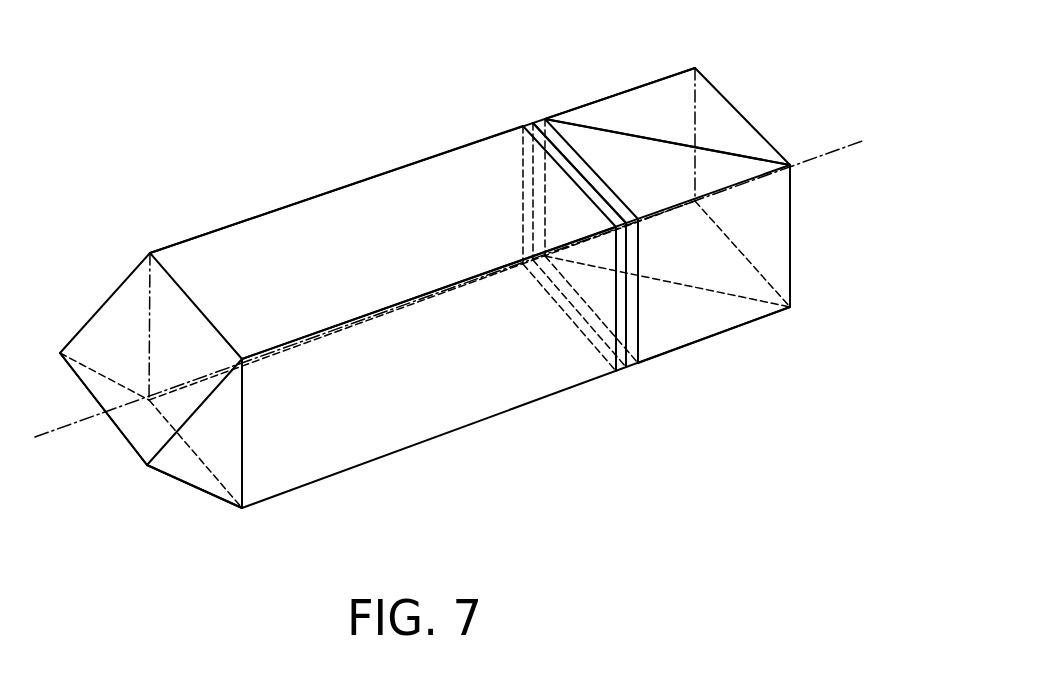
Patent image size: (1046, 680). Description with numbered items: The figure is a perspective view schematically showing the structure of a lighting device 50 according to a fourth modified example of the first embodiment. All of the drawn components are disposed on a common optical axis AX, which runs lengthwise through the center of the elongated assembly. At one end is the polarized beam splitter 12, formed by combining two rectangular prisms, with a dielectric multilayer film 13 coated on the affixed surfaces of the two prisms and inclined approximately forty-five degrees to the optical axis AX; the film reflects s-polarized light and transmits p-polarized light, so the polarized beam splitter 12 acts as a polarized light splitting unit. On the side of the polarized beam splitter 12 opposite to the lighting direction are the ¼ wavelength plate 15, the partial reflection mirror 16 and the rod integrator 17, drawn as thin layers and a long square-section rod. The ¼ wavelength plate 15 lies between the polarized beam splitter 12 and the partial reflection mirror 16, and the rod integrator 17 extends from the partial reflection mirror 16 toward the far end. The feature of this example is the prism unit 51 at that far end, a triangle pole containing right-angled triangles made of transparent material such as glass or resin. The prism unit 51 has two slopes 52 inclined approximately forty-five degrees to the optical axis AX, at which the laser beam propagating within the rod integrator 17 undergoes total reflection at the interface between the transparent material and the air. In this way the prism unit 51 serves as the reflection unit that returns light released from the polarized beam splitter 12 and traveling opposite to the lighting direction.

The lighting device 50 is at (277, 155).
The prism unit 51 is at (83, 298).
The slopes 52 is at (137, 430).
The rod integrator 17 is at (383, 190).
The partial reflection mirror 16 is at (523, 124).
The ¼ wavelength plate 15 is at (540, 117).
The polarized beam splitter 12 is at (650, 97).
The dielectric multilayer film 13 is at (732, 150).
The optical axis AX is at (820, 157).